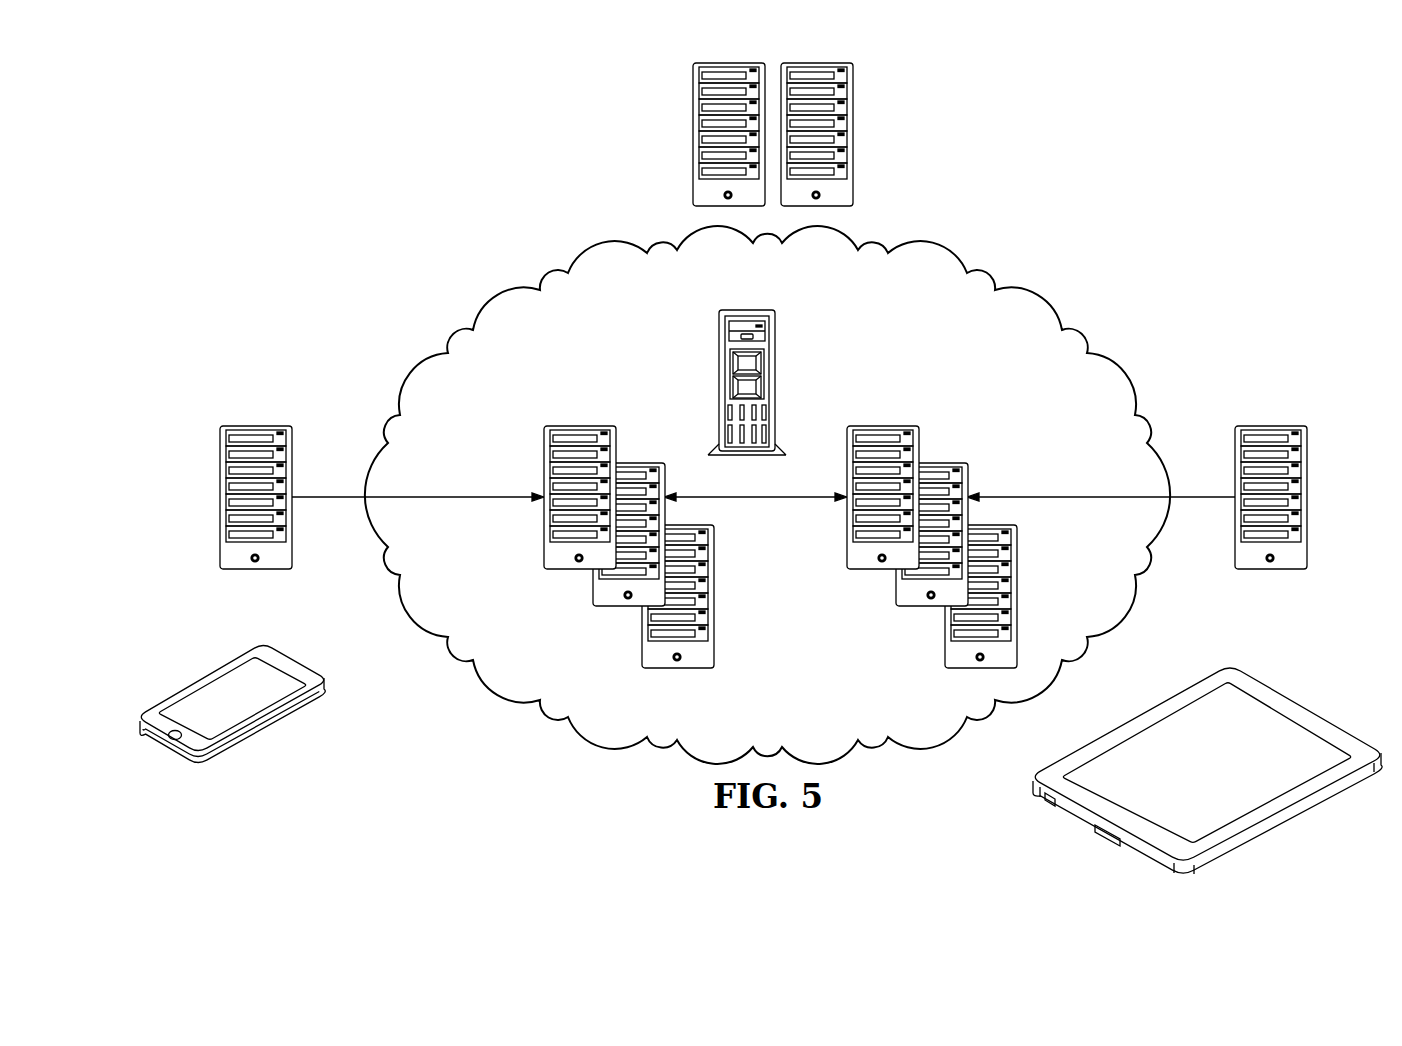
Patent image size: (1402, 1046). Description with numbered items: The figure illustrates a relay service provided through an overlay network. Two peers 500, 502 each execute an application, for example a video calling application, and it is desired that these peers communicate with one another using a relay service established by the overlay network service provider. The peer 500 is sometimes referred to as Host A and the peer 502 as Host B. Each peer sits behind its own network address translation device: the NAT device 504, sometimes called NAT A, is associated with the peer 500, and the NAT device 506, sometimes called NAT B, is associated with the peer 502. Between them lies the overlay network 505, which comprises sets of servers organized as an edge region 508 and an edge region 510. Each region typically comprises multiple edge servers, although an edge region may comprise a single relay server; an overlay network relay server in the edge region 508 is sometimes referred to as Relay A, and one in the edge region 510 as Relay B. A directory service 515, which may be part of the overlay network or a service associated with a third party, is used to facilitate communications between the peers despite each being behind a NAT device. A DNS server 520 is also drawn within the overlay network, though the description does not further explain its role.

The peer 500 is at (200, 680).
The peer 502 is at (1308, 703).
The NAT device 504 is at (255, 426).
The overlay network 505 is at (951, 235).
The NAT device 506 is at (1270, 426).
The edge region 508 is at (578, 425).
The edge region 510 is at (877, 425).
The directory service 515 is at (683, 130).
The DNS server 520 is at (718, 382).